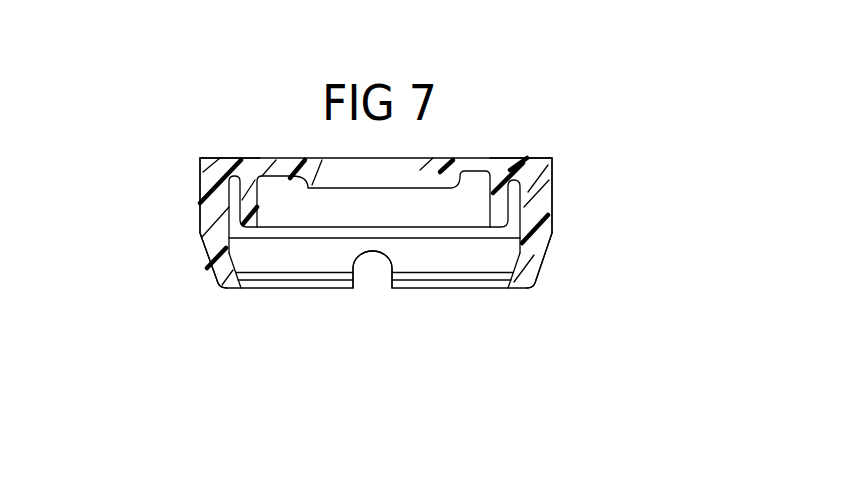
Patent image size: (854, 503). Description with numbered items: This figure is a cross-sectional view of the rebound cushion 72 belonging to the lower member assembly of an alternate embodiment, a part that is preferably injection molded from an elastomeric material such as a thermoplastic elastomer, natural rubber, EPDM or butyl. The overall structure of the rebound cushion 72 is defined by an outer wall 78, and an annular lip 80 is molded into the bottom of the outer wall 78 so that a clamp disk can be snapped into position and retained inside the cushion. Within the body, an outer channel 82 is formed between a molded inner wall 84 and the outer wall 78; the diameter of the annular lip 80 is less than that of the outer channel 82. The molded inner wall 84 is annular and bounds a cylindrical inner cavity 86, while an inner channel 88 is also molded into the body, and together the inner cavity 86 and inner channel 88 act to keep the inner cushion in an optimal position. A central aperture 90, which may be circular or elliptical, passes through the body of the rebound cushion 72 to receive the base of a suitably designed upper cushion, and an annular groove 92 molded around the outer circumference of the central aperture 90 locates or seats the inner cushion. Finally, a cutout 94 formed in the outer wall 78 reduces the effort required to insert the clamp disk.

The rebound cushion 72 is at (507, 156).
The outer wall 78 is at (213, 212).
The annular lip 80 is at (223, 270).
The outer channel 82 is at (236, 199).
The molded inner wall 84 is at (235, 157).
The inner cavity 86 is at (453, 210).
The inner channel 88 is at (262, 157).
The central aperture 90 is at (428, 177).
The annular groove 92 is at (309, 157).
The cutout 94 is at (372, 262).